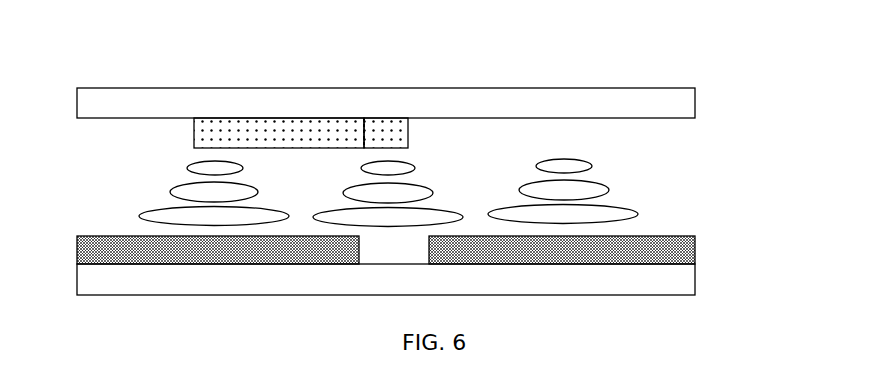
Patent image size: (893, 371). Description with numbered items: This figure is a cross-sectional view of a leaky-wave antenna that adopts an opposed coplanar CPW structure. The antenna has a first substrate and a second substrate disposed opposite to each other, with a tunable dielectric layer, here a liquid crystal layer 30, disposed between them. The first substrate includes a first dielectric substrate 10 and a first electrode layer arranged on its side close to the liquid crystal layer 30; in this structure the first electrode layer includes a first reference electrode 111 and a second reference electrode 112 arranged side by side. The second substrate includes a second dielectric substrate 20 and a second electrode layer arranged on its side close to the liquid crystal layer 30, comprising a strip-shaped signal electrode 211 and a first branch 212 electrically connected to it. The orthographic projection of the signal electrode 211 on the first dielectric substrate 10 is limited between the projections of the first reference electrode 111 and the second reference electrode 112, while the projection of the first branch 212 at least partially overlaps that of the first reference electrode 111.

The first dielectric substrate 10 is at (665, 280).
The first reference electrode 111 is at (150, 247).
The second reference electrode 112 is at (665, 244).
The second dielectric substrate 20 is at (665, 103).
The signal electrode 211 is at (398, 130).
The first branch 212 is at (327, 135).
The liquid crystal layer 30 is at (608, 190).